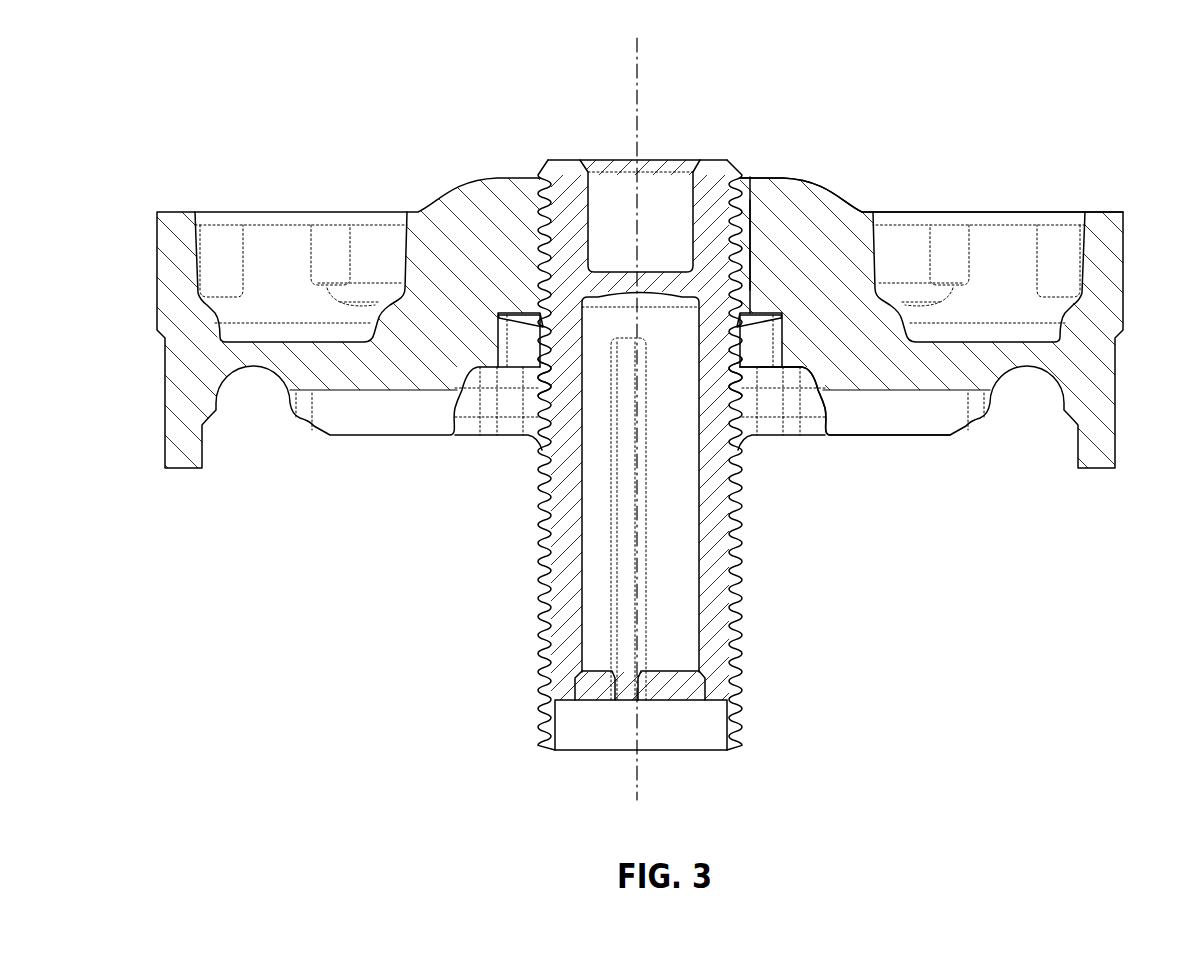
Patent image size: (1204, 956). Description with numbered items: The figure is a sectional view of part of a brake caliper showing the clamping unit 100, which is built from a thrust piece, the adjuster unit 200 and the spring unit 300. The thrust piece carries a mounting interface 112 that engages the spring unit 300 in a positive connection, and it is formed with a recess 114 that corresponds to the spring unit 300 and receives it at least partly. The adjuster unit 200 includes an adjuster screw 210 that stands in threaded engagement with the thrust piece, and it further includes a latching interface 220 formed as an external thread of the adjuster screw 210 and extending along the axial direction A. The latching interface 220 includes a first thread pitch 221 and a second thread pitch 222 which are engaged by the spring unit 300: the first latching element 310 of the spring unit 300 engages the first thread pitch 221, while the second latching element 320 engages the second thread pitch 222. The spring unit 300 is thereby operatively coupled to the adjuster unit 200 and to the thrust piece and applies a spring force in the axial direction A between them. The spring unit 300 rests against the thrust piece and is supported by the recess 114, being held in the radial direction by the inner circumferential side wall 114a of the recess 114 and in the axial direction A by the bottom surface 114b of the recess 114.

The clamping unit 100 is at (670, 252).
The mounting interface 112 is at (795, 185).
The recess 114 is at (880, 296).
The inner circumferential side wall 114a is at (782, 337).
The bottom surface 114b is at (783, 233).
The adjuster unit 200 is at (689, 401).
The adjuster screw 210 is at (572, 593).
The latching interface 220 is at (701, 455).
The first thread pitch 221 is at (545, 375).
The second thread pitch 222 is at (743, 372).
The spring unit 300 is at (645, 321).
The first latching element 310 is at (540, 323).
The second latching element 320 is at (736, 335).
The axial direction A is at (637, 80).